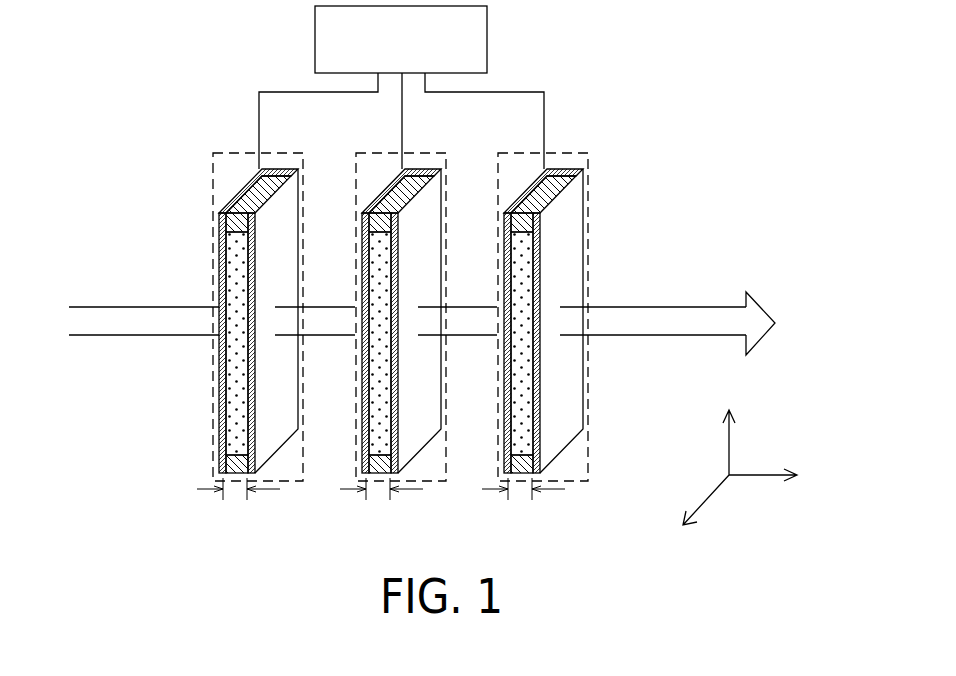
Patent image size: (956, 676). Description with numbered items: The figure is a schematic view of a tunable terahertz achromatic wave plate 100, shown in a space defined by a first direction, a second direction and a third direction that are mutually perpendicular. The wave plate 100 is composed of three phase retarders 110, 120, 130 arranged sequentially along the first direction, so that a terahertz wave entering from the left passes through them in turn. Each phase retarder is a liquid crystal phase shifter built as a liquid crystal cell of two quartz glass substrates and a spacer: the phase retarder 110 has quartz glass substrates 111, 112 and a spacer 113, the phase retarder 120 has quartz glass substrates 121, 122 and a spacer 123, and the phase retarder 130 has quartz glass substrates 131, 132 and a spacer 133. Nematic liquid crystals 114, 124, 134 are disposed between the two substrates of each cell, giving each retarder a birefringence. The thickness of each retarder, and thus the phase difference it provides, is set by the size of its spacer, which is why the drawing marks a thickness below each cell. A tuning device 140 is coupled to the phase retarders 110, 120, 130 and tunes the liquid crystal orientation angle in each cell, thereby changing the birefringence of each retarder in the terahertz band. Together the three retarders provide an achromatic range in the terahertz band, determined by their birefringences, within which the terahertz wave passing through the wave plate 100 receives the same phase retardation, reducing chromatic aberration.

The tunable terahertz achromatic wave plate 100 is at (777, 601).
The phase retarder 110 is at (253, 317).
The quartz glass substrate 111 is at (198, 338).
The quartz glass substrate 112 is at (296, 312).
The spacer 113 is at (234, 191).
The nematic liquid crystals 114 is at (205, 343).
The phase retarder 120 is at (396, 317).
The quartz glass substrate 121 is at (341, 338).
The quartz glass substrate 122 is at (439, 312).
The spacer 123 is at (377, 191).
The nematic liquid crystals 124 is at (348, 343).
The phase retarder 130 is at (538, 317).
The quartz glass substrate 131 is at (483, 338).
The quartz glass substrate 132 is at (581, 312).
The spacer 133 is at (519, 191).
The nematic liquid crystals 134 is at (490, 343).
The tuning device 140 is at (488, 37).